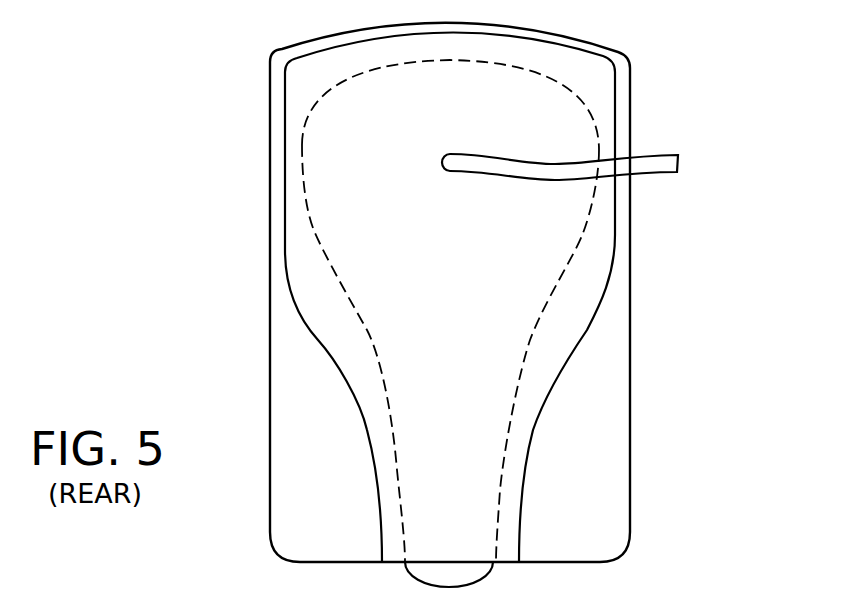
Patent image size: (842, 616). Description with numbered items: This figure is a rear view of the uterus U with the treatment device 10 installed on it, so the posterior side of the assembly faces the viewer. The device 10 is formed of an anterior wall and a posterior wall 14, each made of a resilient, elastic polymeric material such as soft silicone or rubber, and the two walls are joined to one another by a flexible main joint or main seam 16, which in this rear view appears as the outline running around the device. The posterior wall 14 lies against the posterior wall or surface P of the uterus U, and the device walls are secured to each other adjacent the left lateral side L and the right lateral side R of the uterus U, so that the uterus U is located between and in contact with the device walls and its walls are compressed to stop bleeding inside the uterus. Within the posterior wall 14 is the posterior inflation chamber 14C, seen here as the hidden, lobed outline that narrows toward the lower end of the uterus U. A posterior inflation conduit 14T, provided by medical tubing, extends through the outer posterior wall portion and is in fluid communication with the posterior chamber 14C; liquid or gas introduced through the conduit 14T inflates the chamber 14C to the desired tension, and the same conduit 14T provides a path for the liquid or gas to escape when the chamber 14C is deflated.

The treatment device 10 is at (324, 487).
The posterior wall 14 is at (332, 216).
The posterior inflation chamber 14C is at (353, 355).
The posterior inflation conduit 14T is at (663, 155).
The main seam 16 is at (322, 39).
The left lateral side L is at (337, 278).
The posterior wall P is at (540, 213).
The right lateral side R is at (567, 268).
The uterus U is at (480, 577).